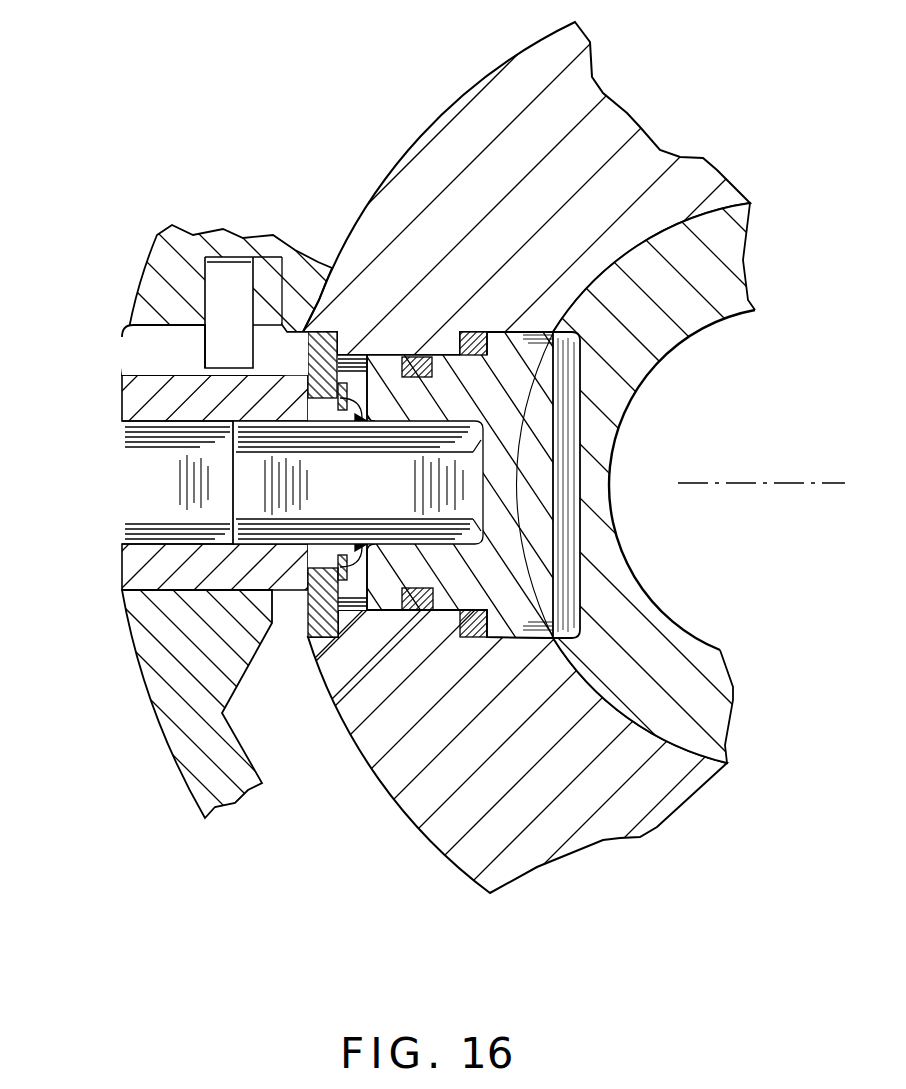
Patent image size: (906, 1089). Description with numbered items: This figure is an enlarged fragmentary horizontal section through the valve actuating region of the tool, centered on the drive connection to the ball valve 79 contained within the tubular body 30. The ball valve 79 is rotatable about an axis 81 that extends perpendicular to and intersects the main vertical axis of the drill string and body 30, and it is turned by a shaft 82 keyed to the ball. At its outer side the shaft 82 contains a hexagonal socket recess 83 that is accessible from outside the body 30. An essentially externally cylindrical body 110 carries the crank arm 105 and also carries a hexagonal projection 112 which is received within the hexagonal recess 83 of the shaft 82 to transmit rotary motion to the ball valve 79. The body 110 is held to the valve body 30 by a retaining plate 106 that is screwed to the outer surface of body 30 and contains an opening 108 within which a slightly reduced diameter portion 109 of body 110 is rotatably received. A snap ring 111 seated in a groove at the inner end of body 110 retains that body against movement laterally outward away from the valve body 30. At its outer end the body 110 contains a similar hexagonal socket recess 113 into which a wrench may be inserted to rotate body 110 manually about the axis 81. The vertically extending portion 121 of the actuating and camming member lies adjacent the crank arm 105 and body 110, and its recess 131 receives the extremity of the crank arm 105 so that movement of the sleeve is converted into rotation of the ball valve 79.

The tubular body 30 is at (398, 789).
The ball type valve 79 is at (697, 318).
The axis 81 is at (752, 481).
The shaft 82 is at (533, 470).
The hexagonal socket recess 83 is at (422, 428).
The crank arm 105 is at (220, 333).
The retaining plate 106 is at (320, 332).
The opening 108 is at (285, 598).
The reduced diameter portion 109 is at (365, 357).
The externally cylindrical body 110 is at (160, 583).
The snap ring 111 is at (361, 612).
The hexagonal projection 112 is at (358, 482).
The hexagonal socket recess 113 is at (160, 424).
The vertically extending portion 121 is at (163, 262).
The recess 131 is at (264, 302).